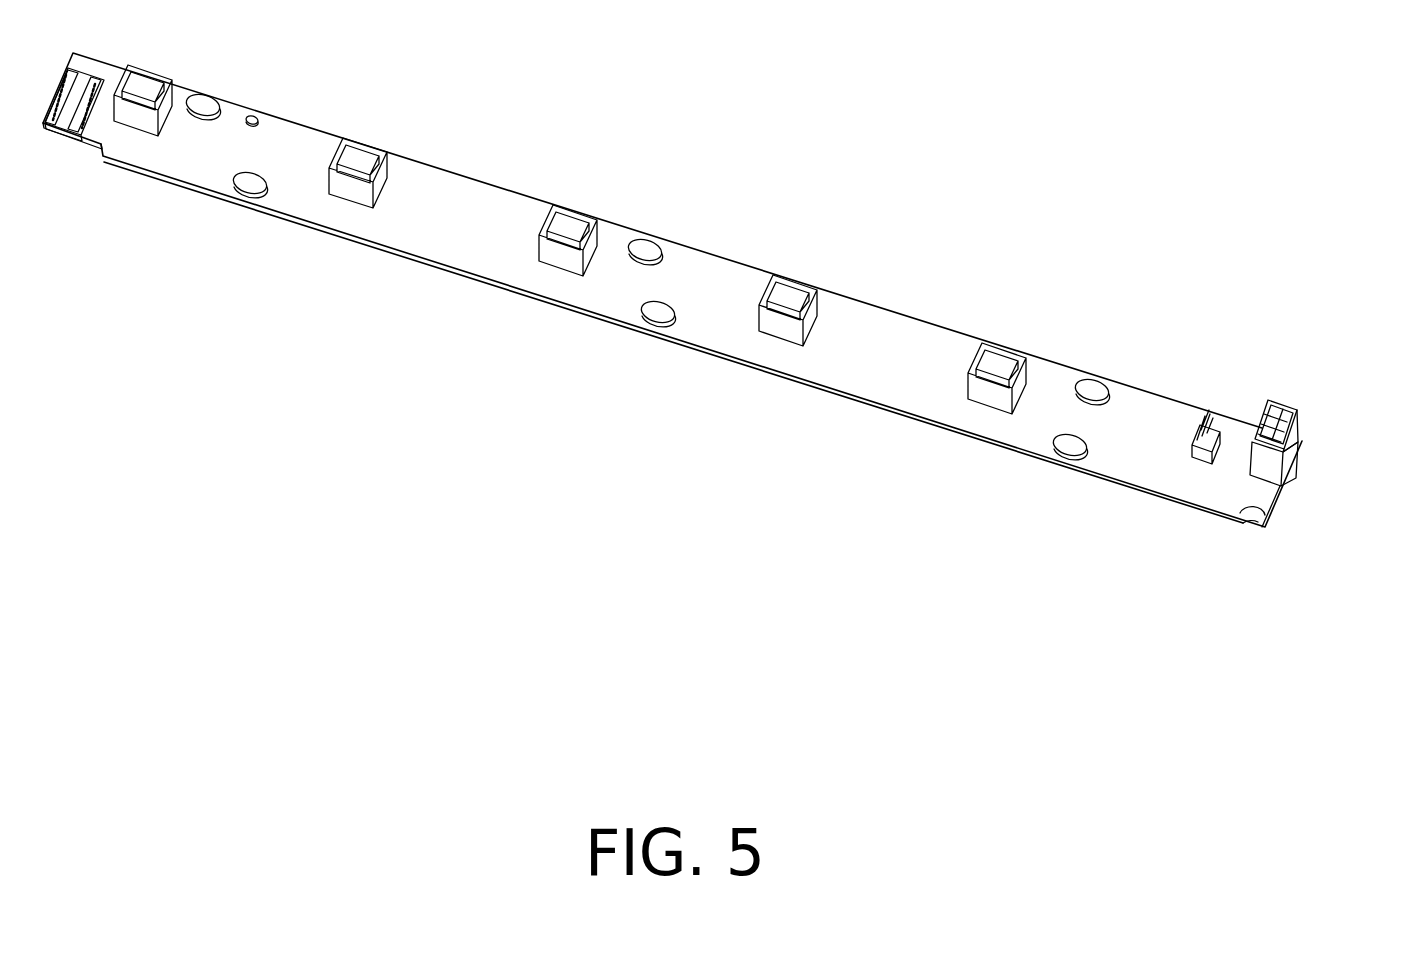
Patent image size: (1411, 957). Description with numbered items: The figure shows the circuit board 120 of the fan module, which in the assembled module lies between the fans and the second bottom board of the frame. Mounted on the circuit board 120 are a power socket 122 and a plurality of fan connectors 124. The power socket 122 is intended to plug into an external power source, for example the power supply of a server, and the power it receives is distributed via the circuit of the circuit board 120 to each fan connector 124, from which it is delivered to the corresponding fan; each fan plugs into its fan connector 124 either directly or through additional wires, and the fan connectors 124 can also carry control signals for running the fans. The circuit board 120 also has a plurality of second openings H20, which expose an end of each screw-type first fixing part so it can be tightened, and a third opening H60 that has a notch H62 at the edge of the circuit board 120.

The circuit board 120 is at (1302, 683).
The power socket 122 is at (1273, 458).
The fan connector 124 is at (792, 282).
The second opening H20 is at (661, 322).
The third opening H60 is at (1245, 506).
The notch H62 is at (1244, 522).